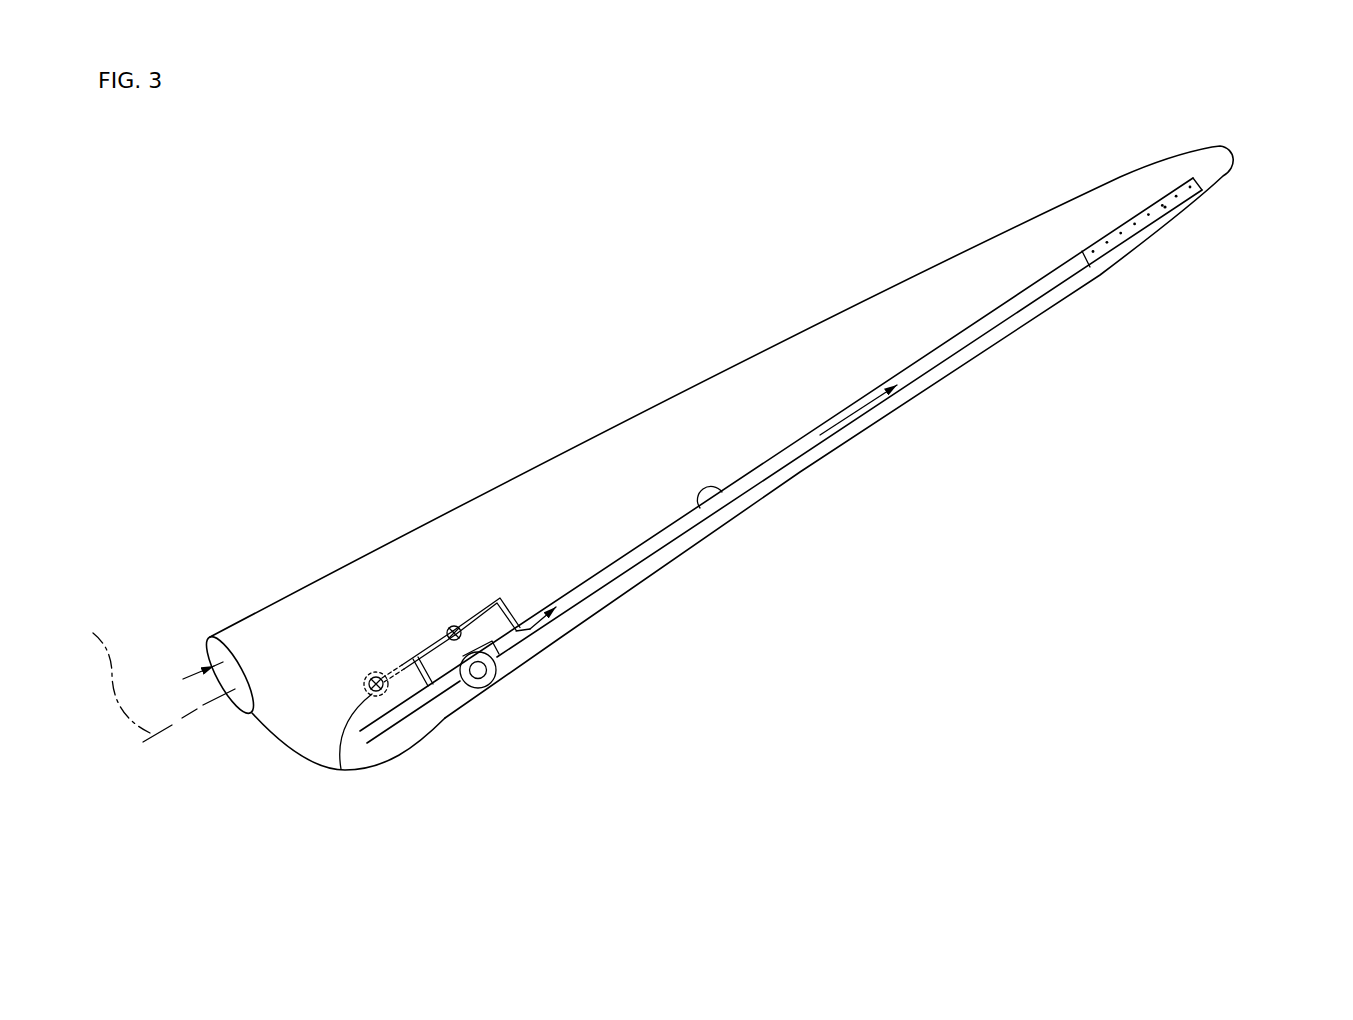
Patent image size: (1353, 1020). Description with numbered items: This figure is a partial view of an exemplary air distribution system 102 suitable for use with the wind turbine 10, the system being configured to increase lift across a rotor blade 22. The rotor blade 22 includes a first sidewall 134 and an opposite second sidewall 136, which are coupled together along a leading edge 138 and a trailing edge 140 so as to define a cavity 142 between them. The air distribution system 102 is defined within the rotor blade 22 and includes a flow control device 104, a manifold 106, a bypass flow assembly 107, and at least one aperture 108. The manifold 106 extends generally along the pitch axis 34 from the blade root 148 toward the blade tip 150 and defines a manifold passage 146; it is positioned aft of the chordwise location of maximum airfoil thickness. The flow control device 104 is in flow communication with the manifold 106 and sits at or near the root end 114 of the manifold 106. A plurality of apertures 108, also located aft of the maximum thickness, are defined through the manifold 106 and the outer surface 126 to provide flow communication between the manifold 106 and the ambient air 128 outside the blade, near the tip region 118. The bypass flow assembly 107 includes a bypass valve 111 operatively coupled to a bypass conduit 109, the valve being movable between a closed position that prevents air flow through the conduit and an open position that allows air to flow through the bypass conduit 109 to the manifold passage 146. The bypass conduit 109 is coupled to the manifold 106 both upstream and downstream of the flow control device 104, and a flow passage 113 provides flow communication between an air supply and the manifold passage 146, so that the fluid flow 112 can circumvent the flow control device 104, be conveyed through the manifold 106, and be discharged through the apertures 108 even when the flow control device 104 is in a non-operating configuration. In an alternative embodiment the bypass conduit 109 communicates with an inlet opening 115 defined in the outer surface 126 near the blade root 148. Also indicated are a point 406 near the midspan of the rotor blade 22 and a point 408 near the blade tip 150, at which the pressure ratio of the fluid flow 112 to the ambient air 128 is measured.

The wind turbine 10 is at (310, 319).
The rotor blade 22 is at (870, 143).
The pitch axis 34 is at (157, 676).
The air distribution system 102 is at (303, 480).
The flow control device 104 is at (492, 692).
The manifold 106 is at (712, 512).
The bypass flow assembly 107 is at (570, 676).
The aperture 108 is at (1165, 207).
The bypass conduit 109 is at (430, 649).
The bypass valve 111 is at (449, 630).
The fluid flow 112 is at (503, 601).
The flow passage 113 is at (493, 600).
The root end 114 is at (413, 711).
The inlet opening 115 is at (342, 769).
The blade tip 118 is at (1209, 182).
The outer surface 126 is at (845, 342).
The ambient air 128 is at (1064, 540).
The first sidewall 134 is at (1032, 236).
The second sidewall 136 is at (913, 405).
The leading edge 138 is at (636, 418).
The trailing edge 140 is at (597, 603).
The cavity 142 is at (182, 679).
The manifold passage 146 is at (987, 323).
The blade root 148 is at (254, 714).
The blade tip 150 is at (1229, 147).
The point near midspan 406 is at (878, 427).
The point near blade tip 408 is at (1169, 237).